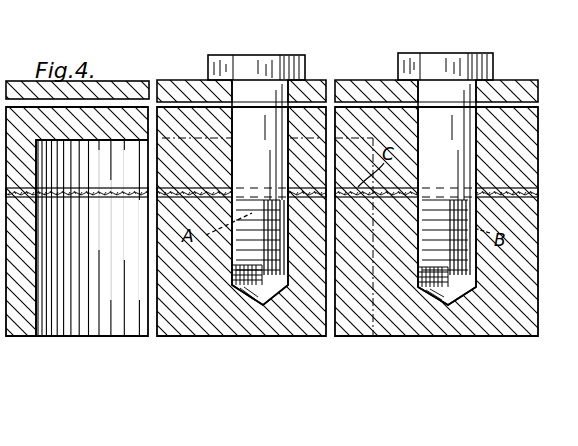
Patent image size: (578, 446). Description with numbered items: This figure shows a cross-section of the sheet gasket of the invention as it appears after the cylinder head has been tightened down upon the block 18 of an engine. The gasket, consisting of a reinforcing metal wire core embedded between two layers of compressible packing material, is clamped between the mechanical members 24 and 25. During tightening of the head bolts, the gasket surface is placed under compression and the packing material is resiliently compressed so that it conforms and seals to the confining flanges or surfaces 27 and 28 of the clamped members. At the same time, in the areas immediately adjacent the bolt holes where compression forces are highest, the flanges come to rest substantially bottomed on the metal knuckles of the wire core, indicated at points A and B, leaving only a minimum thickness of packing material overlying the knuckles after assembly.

The block 18 is at (416, 319).
The mechanical member 24 is at (506, 112).
The mechanical member 25 is at (503, 312).
The confining flange or surface 27 is at (507, 186).
The confining flange or surface 28 is at (534, 200).